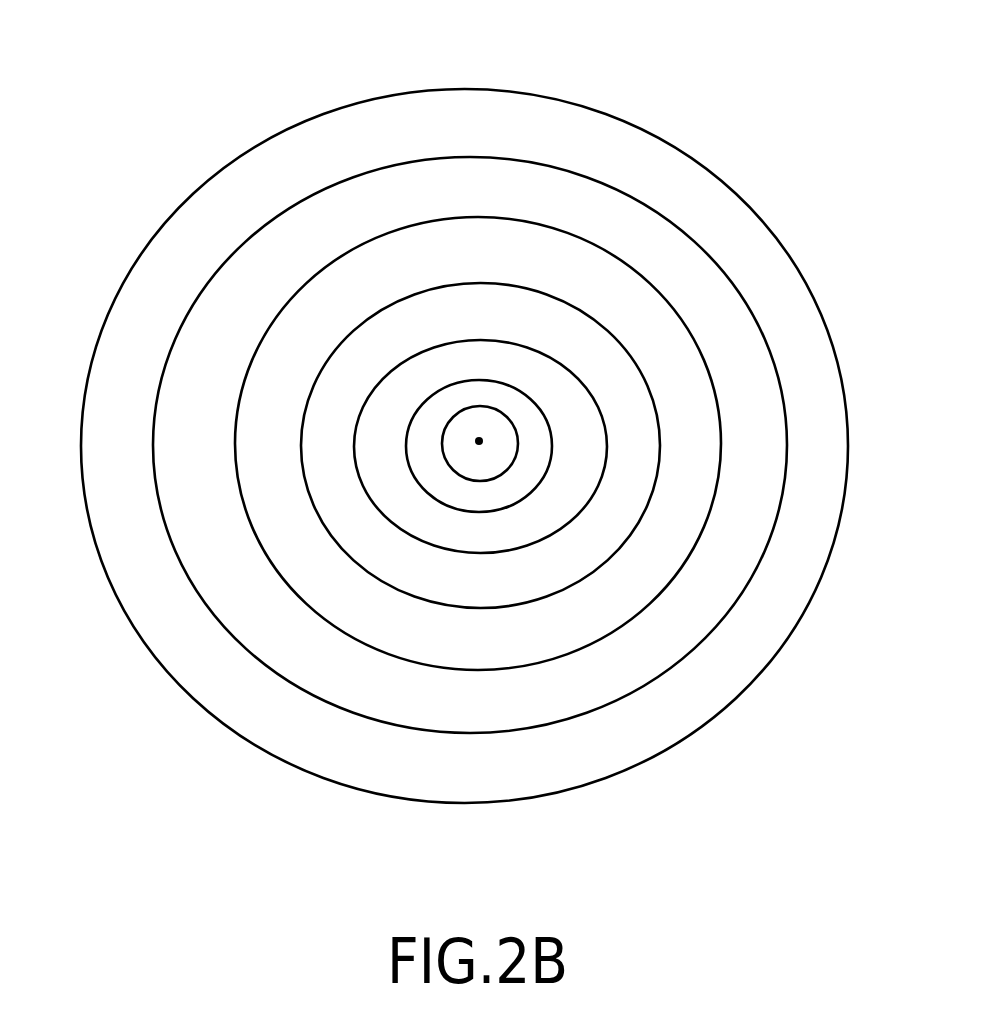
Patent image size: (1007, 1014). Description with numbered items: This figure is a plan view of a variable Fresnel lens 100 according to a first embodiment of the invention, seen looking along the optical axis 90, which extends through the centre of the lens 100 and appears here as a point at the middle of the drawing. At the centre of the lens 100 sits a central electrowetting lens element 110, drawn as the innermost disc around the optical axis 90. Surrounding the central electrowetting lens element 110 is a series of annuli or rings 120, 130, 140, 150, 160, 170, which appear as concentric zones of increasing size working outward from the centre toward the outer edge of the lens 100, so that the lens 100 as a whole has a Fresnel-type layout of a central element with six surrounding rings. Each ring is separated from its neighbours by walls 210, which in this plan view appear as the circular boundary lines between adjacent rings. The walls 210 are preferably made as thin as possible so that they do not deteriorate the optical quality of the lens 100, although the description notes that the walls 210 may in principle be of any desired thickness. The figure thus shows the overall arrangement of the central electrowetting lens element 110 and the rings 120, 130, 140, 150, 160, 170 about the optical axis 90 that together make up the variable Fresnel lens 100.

The optical axis 90 is at (490, 435).
The variable Fresnel lens 100 is at (478, 417).
The central electrowetting lens element 110 is at (488, 415).
The ring 120 is at (455, 405).
The ring 130 is at (413, 372).
The ring 140 is at (348, 360).
The ring 150 is at (273, 400).
The ring 160 is at (187, 493).
The ring 170 is at (165, 597).
The walls 210 is at (482, 446).